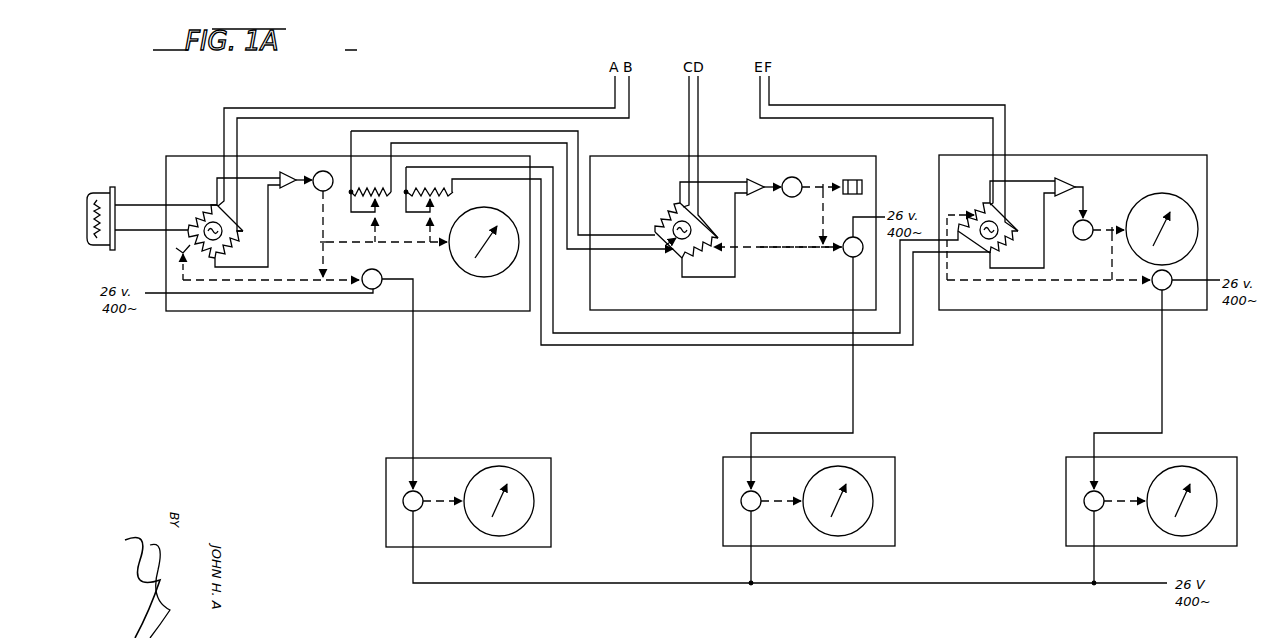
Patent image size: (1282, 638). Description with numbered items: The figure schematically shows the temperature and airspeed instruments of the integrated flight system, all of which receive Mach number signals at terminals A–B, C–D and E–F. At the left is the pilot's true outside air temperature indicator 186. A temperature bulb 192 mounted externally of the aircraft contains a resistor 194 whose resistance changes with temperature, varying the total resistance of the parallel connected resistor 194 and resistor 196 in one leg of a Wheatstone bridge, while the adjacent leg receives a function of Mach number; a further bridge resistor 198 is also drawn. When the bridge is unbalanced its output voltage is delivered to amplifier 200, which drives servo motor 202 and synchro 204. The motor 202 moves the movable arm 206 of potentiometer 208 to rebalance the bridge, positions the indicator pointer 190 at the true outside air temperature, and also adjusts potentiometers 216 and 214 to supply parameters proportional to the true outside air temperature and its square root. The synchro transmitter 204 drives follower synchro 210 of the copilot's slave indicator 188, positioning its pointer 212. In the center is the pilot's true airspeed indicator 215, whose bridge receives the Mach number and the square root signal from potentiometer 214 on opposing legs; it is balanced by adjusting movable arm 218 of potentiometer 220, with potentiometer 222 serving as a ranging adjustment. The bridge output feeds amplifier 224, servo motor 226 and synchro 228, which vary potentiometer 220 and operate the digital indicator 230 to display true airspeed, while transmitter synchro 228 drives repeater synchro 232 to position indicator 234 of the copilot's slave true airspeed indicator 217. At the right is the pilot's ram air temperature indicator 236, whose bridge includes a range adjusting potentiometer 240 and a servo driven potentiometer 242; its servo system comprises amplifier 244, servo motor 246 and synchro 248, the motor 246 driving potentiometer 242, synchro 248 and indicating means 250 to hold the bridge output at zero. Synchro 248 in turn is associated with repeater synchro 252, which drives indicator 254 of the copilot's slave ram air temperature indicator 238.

The true outside air temperature indicator 186 is at (204, 158).
The slave true outside air temperature indicator 188 is at (551, 498).
The indicator pointer 190 is at (461, 256).
The temperature bulb 192 is at (90, 194).
The resistor 194 is at (95, 247).
The resistor 196 is at (201, 213).
The bridge resistor 198 is at (231, 249).
The amplifier 200 is at (271, 190).
The servo motor 202 is at (316, 191).
The synchro 204 is at (381, 273).
The movable arm 206 is at (201, 259).
The potentiometer 208 is at (176, 248).
The follower synchro 210 is at (420, 509).
The pointer 212 is at (494, 517).
The potentiometer 214 is at (383, 188).
The true airspeed indicator 215 is at (822, 158).
The potentiometer 216 is at (440, 188).
The slave true airspeed indicator 217 is at (895, 488).
The movable arm 218 is at (694, 250).
The potentiometer 220 is at (674, 250).
The potentiometer 222 is at (664, 213).
The amplifier 224 is at (757, 186).
The servo motor 226 is at (795, 199).
The synchro 228 is at (848, 257).
The digital indicator 230 is at (862, 187).
The repeater synchro 232 is at (758, 510).
The indicator 234 is at (835, 517).
The ram air temperature indicator 236 is at (1125, 159).
The slave ram air temperature indicator 238 is at (1224, 457).
The range adjusting potentiometer 240 is at (1000, 247).
The servo driven potentiometer 242 is at (980, 208).
The amplifier 244 is at (1070, 184).
The servo motor 246 is at (1080, 241).
The synchro 248 is at (1153, 288).
The indicating means 250 is at (1156, 248).
The repeater synchro 252 is at (1100, 512).
The indicator 254 is at (1175, 517).